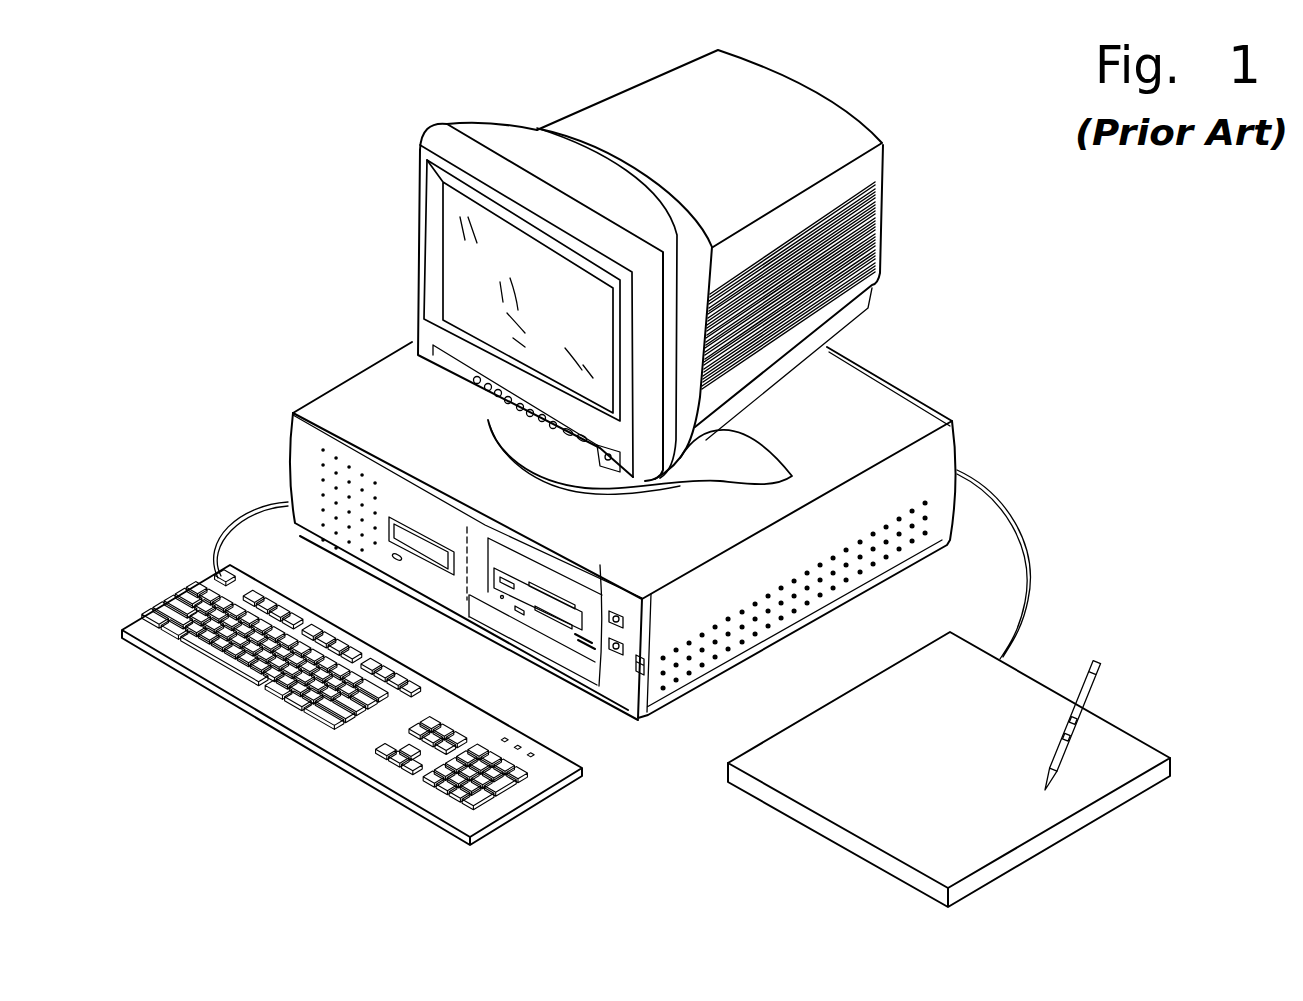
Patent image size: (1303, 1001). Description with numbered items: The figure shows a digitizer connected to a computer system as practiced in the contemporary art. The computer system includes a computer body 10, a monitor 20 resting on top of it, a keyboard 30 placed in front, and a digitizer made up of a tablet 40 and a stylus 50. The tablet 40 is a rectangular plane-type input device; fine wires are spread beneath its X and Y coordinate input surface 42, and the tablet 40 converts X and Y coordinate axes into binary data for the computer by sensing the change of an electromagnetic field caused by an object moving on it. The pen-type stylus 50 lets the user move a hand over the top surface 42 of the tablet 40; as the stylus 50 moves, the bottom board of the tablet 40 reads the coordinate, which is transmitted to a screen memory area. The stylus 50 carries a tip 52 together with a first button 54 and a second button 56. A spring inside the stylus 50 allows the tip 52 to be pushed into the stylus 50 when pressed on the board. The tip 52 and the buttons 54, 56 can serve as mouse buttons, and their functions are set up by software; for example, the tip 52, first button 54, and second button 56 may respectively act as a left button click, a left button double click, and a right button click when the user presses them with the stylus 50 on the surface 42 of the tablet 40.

The computer body 10 is at (900, 410).
The monitor 20 is at (878, 168).
The keyboard 30 is at (555, 787).
The tablet 40 is at (992, 688).
The X and Y coordinate input surface 42 is at (1127, 740).
The stylus 50 is at (1057, 697).
The tip 52 is at (1043, 788).
The first button 54 is at (1062, 738).
The second button 56 is at (1070, 722).